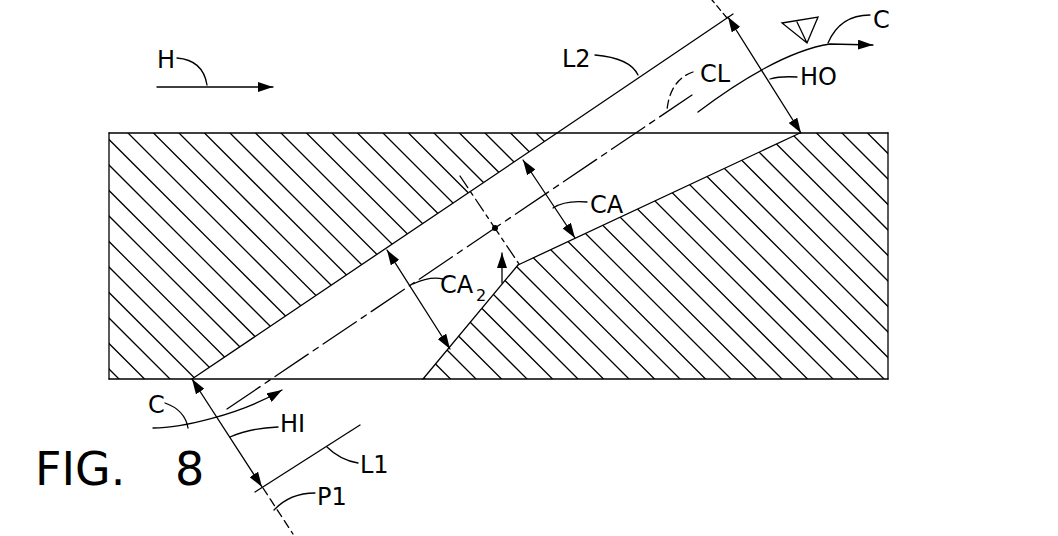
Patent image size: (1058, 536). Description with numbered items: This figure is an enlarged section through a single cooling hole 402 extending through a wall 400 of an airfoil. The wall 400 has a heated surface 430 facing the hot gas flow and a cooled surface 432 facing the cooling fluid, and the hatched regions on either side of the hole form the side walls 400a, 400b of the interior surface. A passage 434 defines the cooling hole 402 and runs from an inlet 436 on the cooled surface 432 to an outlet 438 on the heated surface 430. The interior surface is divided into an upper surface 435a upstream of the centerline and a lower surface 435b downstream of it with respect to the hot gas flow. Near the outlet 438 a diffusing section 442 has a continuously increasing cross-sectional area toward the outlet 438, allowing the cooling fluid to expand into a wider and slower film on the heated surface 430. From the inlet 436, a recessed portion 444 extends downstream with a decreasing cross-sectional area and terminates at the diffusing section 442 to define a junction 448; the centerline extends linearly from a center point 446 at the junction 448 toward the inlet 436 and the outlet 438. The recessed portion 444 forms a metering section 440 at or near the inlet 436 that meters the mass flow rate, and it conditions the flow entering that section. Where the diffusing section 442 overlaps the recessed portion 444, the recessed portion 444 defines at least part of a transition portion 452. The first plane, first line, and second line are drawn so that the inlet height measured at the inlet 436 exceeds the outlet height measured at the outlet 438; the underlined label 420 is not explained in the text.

The wall 400 is at (529, 267).
The side wall 400a is at (335, 282).
The side wall 400b is at (640, 233).
The cooling hole 402 is at (820, 134).
The cooling hole 420 is at (542, 440).
The heated surface 430 is at (415, 267).
The cooled surface 432 is at (665, 380).
The passage 434 is at (348, 326).
The upper surface 435a is at (374, 256).
The lower surface 435b is at (659, 207).
The inlet 436 is at (347, 380).
The outlet 438 is at (695, 133).
The metering section 440 is at (258, 345).
The diffusing section 442 is at (591, 187).
The recessed portion 444 is at (407, 355).
The center point 446 is at (495, 226).
The junction 448 is at (520, 265).
The transition portion 452 is at (503, 284).